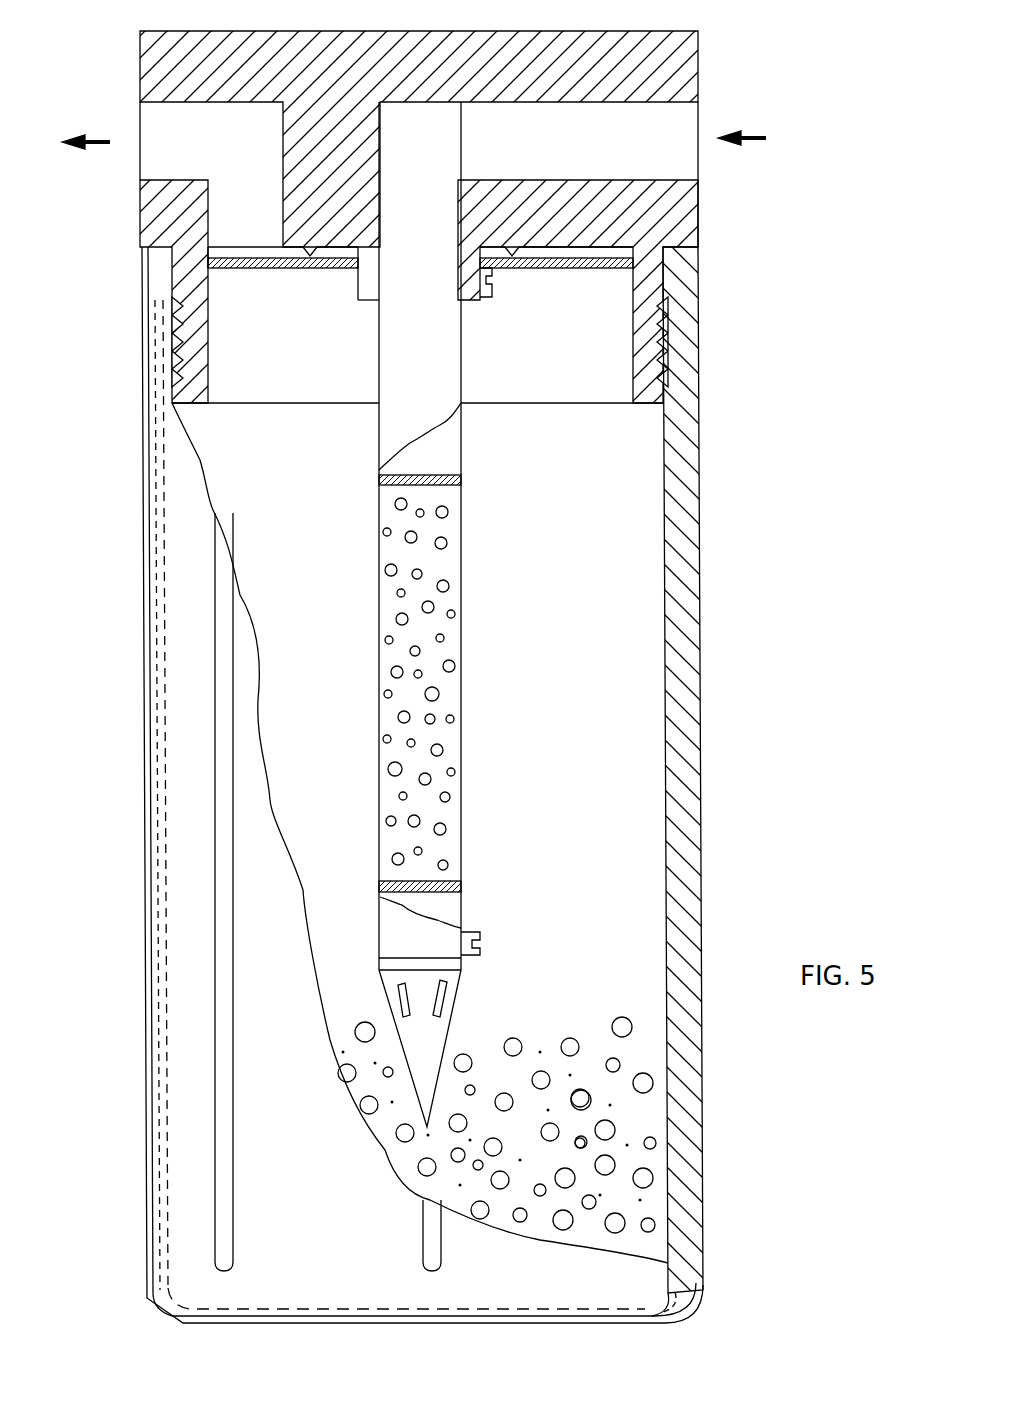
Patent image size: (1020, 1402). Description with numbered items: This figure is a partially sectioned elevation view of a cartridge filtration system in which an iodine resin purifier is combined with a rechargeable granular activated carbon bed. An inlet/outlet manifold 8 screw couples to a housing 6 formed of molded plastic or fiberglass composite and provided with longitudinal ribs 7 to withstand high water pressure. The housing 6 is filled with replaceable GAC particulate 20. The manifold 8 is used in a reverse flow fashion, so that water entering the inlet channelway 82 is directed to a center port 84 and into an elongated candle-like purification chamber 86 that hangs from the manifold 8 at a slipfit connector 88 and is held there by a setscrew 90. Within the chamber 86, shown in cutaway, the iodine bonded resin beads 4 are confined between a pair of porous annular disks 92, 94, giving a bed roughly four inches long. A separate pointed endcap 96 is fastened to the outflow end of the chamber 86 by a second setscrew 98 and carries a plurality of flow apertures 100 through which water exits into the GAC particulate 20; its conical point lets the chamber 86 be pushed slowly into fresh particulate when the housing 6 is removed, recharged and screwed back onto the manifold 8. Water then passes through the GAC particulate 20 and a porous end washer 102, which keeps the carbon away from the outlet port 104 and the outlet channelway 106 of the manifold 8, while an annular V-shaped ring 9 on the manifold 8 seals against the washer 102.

The inlet/outlet manifold 8 is at (140, 62).
The housing 6 is at (146, 1115).
The longitudinal ribs 7 is at (218, 840).
The iodine bonded resin beads 4 is at (445, 690).
The GAC particulate 20 is at (607, 1133).
The annular V-shaped ridge 9 is at (513, 257).
The inlet channelway 82 is at (624, 150).
The center port 84 is at (420, 247).
The purification chamber 86 is at (434, 398).
The slipfit connector 88 is at (358, 300).
The setscrew 90 is at (482, 297).
The porous annular disk 92 is at (462, 480).
The porous annular disk 94 is at (462, 884).
The pointed endcap 96 is at (388, 1000).
The second setscrew 98 is at (480, 950).
The flow apertures 100 is at (412, 1012).
The porous end washer 102 is at (228, 268).
The outlet port 104 is at (239, 246).
The outlet channelway 106 is at (214, 150).